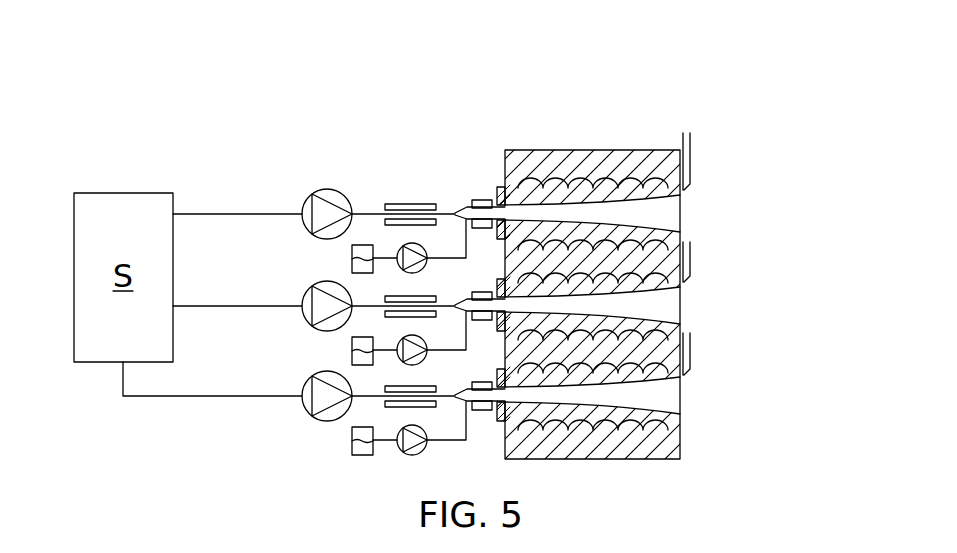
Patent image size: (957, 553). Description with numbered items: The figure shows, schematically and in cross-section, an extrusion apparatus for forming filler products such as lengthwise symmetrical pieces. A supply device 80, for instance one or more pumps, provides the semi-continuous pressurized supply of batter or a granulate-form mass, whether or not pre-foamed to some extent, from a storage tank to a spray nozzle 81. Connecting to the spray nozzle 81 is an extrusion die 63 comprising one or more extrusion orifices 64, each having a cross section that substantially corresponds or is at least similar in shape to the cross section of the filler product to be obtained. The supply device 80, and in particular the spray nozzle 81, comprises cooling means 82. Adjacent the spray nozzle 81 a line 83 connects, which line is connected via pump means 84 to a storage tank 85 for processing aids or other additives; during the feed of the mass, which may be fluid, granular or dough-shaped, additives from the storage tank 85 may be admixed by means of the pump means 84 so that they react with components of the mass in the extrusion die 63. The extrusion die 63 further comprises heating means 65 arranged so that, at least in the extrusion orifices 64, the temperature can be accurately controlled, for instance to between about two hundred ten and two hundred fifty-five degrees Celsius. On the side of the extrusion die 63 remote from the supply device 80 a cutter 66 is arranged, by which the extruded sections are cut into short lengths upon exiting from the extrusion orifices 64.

The extrusion die 63 is at (582, 128).
The extrusion orifice 64 is at (656, 209).
The heating means 65 is at (655, 422).
The cutter 66 is at (687, 162).
The supply device 80 is at (308, 175).
The spray nozzle 81 is at (461, 207).
The cooling means 82 is at (397, 204).
The line 83 is at (467, 441).
The pump means 84 is at (402, 453).
The storage tank 85 is at (352, 448).